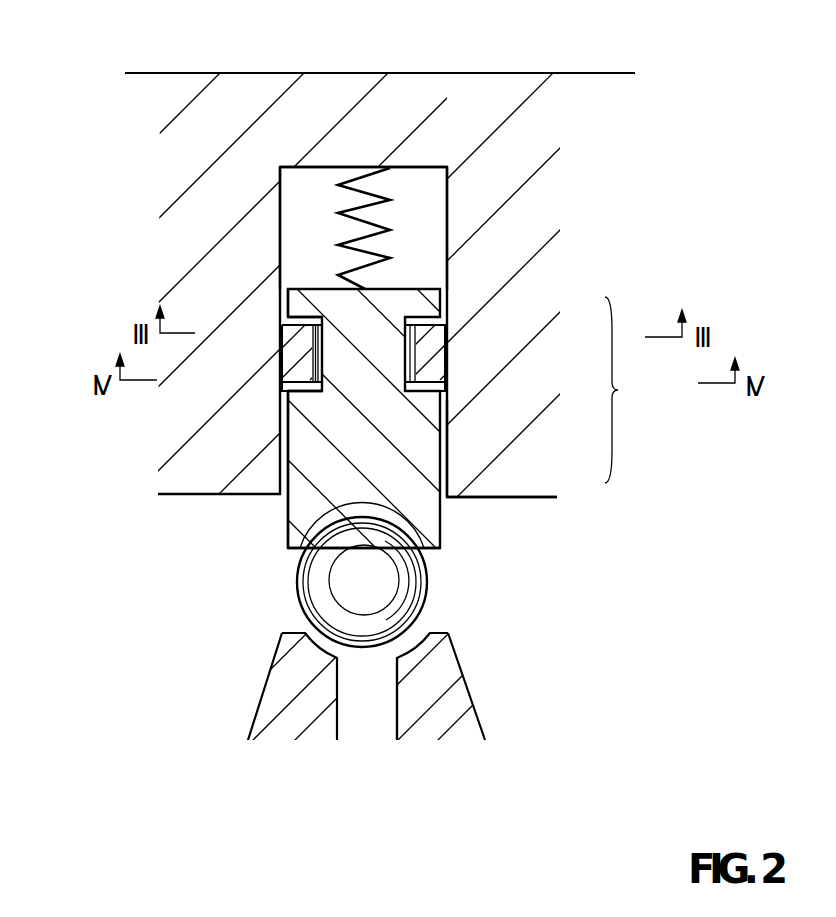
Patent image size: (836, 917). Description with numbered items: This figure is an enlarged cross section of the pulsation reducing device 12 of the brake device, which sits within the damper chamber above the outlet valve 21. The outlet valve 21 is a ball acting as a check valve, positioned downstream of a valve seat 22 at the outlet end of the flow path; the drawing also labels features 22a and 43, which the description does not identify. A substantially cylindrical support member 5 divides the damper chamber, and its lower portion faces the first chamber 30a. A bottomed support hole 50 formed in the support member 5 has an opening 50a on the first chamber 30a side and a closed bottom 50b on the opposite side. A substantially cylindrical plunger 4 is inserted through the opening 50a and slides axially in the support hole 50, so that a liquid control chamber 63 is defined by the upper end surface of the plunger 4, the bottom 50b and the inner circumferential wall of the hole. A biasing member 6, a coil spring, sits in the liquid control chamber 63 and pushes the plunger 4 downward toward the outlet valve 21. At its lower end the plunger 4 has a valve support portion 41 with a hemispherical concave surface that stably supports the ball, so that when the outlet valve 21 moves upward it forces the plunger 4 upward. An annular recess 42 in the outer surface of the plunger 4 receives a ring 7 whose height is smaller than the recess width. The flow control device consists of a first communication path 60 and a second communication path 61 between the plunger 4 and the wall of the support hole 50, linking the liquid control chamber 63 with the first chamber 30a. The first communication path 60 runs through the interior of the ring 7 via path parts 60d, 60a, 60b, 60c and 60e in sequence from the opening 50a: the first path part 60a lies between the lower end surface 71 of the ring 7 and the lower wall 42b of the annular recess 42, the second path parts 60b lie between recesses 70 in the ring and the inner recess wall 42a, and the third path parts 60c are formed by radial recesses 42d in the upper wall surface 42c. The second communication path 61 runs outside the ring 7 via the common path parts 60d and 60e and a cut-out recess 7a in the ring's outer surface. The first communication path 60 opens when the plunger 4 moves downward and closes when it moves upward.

The plunger 4 is at (452, 465).
The support member 5 is at (482, 378).
The biasing member 6 is at (390, 255).
The ring 7 is at (445, 349).
The cut-out recess 7a is at (280, 360).
The pulsation reducing device 12 is at (629, 390).
The outlet valve 21 is at (383, 600).
The valve seat 22 is at (443, 672).
The valve seat inner surface 22a is at (490, 667).
The first chamber 30a is at (193, 625).
The valve support portion 41 is at (393, 551).
The annular recess 42 is at (285, 390).
The inner recess wall 42a is at (282, 360).
The lower wall 42b is at (305, 391).
The upper wall surface 42c is at (282, 330).
The recesses 42d is at (285, 322).
The spring chamber wall 43 is at (312, 289).
The support hole 50 is at (440, 208).
The opening 50a is at (455, 498).
The closed bottom 50b is at (452, 187).
The first communication path 60 is at (305, 458).
The first path part 60a is at (288, 412).
The second path parts 60b is at (287, 500).
The third path parts 60c is at (296, 302).
The path part 60d is at (296, 393).
The path part 60e is at (300, 317).
The second communication path 61 is at (280, 342).
The liquid control chamber 63 is at (430, 244).
The recesses 70 is at (398, 391).
The lower end surface 71 is at (447, 424).